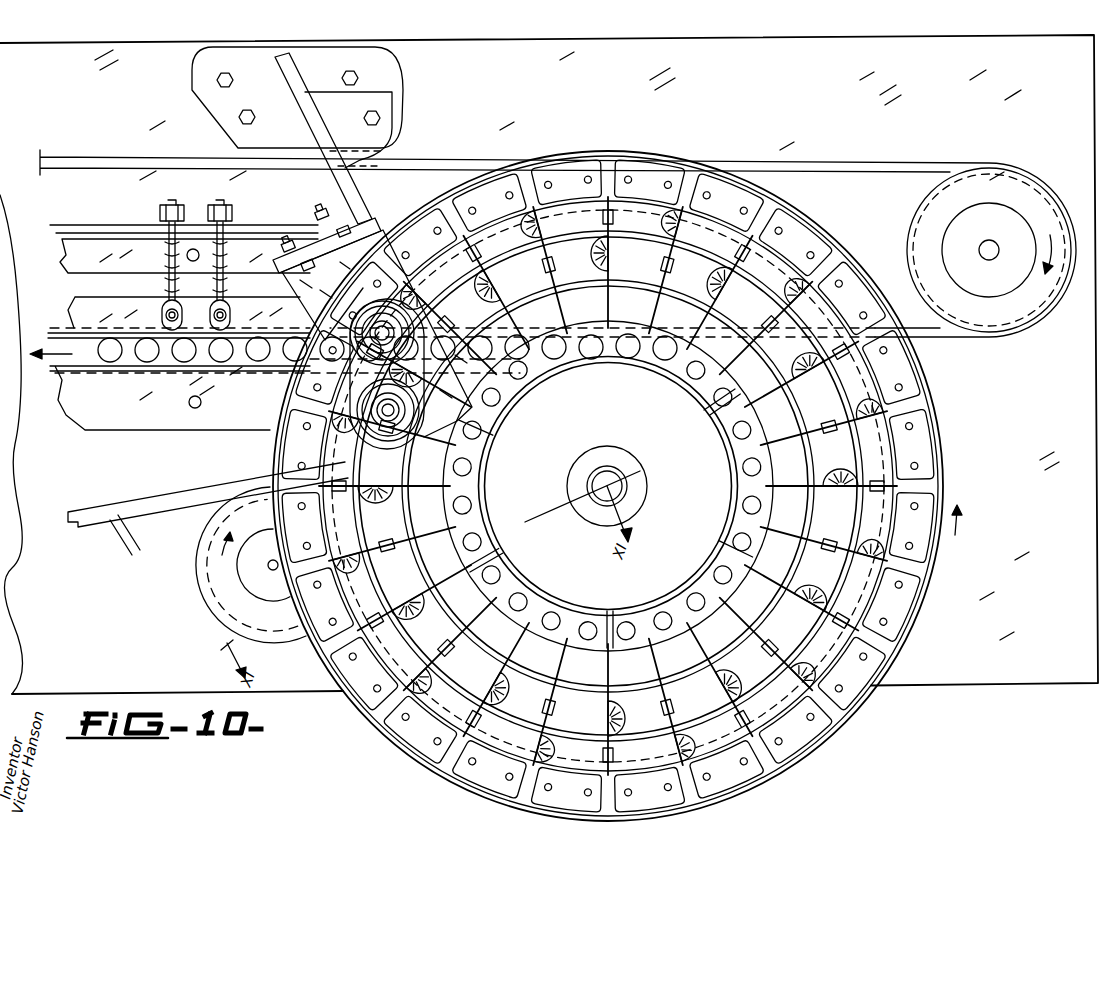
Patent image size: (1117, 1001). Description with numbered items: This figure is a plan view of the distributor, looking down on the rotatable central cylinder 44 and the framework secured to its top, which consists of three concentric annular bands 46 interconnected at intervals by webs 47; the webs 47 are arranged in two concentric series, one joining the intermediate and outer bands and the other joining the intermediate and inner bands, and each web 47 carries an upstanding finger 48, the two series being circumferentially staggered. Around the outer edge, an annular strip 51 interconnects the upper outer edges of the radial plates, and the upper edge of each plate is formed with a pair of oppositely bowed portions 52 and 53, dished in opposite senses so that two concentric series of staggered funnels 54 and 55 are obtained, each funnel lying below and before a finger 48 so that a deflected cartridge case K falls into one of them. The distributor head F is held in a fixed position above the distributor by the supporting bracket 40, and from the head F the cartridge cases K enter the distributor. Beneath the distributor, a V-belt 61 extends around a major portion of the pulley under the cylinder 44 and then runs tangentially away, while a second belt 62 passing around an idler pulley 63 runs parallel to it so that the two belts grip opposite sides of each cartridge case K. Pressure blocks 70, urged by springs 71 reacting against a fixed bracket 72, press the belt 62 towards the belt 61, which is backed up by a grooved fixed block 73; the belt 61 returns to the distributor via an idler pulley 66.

The supporting bracket 40 is at (312, 240).
The central cylinder 44 is at (650, 375).
The annular bands 46 is at (857, 443).
The webs 47 is at (815, 466).
The upstanding finger 48 is at (618, 215).
The annular strip 51 is at (940, 380).
The bowed portion 52 is at (592, 225).
The bowed portion 53 is at (613, 265).
The funnels 54 is at (512, 280).
The funnels 55 is at (572, 240).
The V-belt 61 is at (58, 378).
The second belt 62 is at (60, 332).
The idler pulley 63 is at (912, 214).
The idler pulley 66 is at (218, 598).
The pressure blocks 70 is at (80, 300).
The springs 71 is at (200, 258).
The fixed bracket 72 is at (120, 228).
The fixed block 73 is at (128, 420).
The distributor head F is at (360, 380).
The cartridge cases K is at (363, 453).